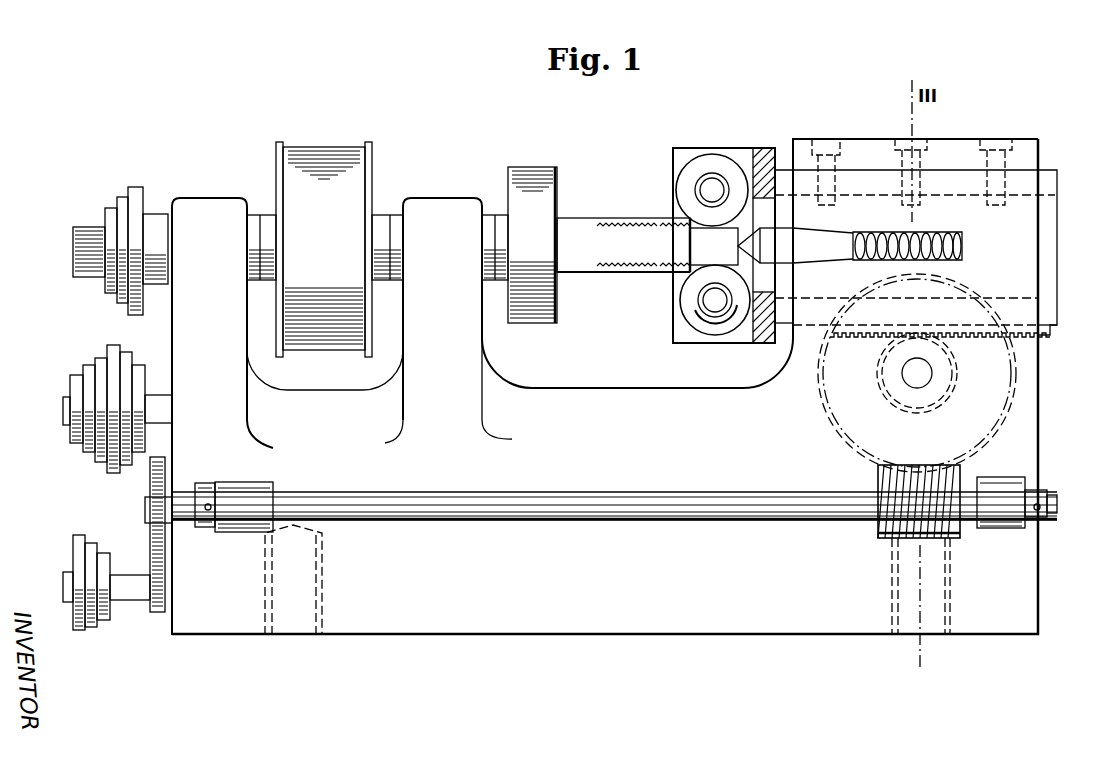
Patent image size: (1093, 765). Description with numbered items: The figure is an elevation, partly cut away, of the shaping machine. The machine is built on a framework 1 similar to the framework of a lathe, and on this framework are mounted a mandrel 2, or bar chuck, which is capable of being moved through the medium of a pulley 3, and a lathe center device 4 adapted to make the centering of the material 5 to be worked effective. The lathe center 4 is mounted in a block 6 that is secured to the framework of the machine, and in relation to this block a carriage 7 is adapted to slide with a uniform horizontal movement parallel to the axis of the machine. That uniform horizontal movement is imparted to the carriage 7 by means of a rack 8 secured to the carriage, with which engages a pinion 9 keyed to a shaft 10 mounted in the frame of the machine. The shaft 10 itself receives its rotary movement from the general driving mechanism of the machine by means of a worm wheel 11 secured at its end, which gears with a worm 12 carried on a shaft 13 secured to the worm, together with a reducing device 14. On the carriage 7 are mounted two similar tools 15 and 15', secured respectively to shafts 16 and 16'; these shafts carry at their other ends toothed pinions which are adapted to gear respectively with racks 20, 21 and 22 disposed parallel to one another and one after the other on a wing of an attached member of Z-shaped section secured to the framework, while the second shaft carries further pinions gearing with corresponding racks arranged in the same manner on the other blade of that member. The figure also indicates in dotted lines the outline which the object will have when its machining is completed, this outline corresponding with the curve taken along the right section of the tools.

The framework 1 is at (375, 610).
The mandrel 2 is at (520, 195).
The pulley 3 is at (328, 178).
The lathe center device 4 is at (780, 240).
The material to be worked 5 is at (575, 230).
The block 6 is at (842, 215).
The carriage 7 is at (760, 165).
The rack 8 is at (1040, 330).
The pinion 9 is at (888, 375).
The shaft 10 is at (922, 375).
The worm wheel 11 is at (865, 422).
The worm 12 is at (888, 513).
The shaft 13 is at (636, 495).
The reducing device 14 is at (158, 583).
The tool 15 is at (684, 176).
The tool 15' is at (679, 307).
The shaft 16 is at (701, 160).
The shaft 16' is at (711, 332).
The rack 20 is at (600, 272).
The rack 21 is at (632, 272).
The rack 22 is at (655, 272).